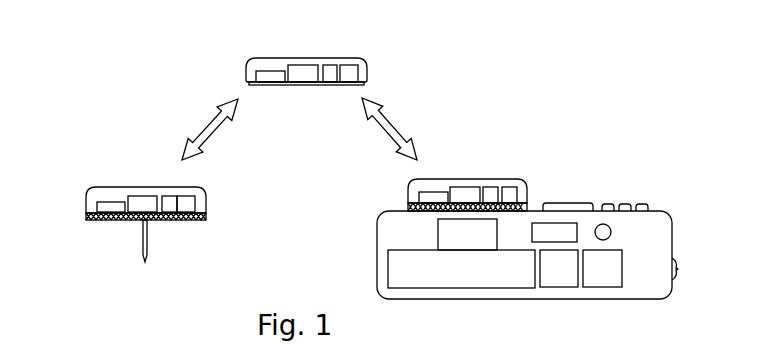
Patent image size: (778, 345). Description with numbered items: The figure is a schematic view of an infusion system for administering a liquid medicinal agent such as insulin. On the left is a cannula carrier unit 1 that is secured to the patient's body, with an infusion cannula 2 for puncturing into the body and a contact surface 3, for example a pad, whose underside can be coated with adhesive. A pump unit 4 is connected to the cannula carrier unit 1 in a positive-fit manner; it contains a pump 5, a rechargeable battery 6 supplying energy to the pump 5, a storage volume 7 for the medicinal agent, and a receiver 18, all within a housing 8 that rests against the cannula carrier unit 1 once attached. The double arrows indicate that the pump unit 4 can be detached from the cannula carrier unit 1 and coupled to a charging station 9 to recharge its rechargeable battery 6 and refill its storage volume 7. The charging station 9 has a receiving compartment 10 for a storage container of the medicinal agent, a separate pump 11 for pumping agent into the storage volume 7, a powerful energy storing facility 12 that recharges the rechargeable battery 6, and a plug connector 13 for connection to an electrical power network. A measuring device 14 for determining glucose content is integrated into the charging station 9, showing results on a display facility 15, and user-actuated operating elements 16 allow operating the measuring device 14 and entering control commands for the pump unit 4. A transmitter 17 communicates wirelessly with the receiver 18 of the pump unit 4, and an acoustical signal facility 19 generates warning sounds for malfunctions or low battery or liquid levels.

The cannula carrier unit 1 is at (149, 239).
The infusion cannula 2 is at (148, 247).
The contact surface 3 is at (181, 222).
The pump unit 4 is at (298, 148).
The pump 5 is at (352, 84).
The rechargeable battery 6 is at (277, 84).
The storage volume 7 is at (330, 84).
The housing 8 is at (367, 72).
The charging station 9 is at (377, 257).
The receiving compartment 10 is at (438, 238).
The pump 11 is at (468, 288).
The energy storing facility 12 is at (555, 288).
The plug connector 13 is at (677, 267).
The measuring device 14 is at (602, 288).
The display facility 15 is at (567, 203).
The operating elements 16 is at (608, 204).
The transmitter 17 is at (545, 222).
The receiver 18 is at (305, 63).
The acoustical signal facility 19 is at (603, 224).